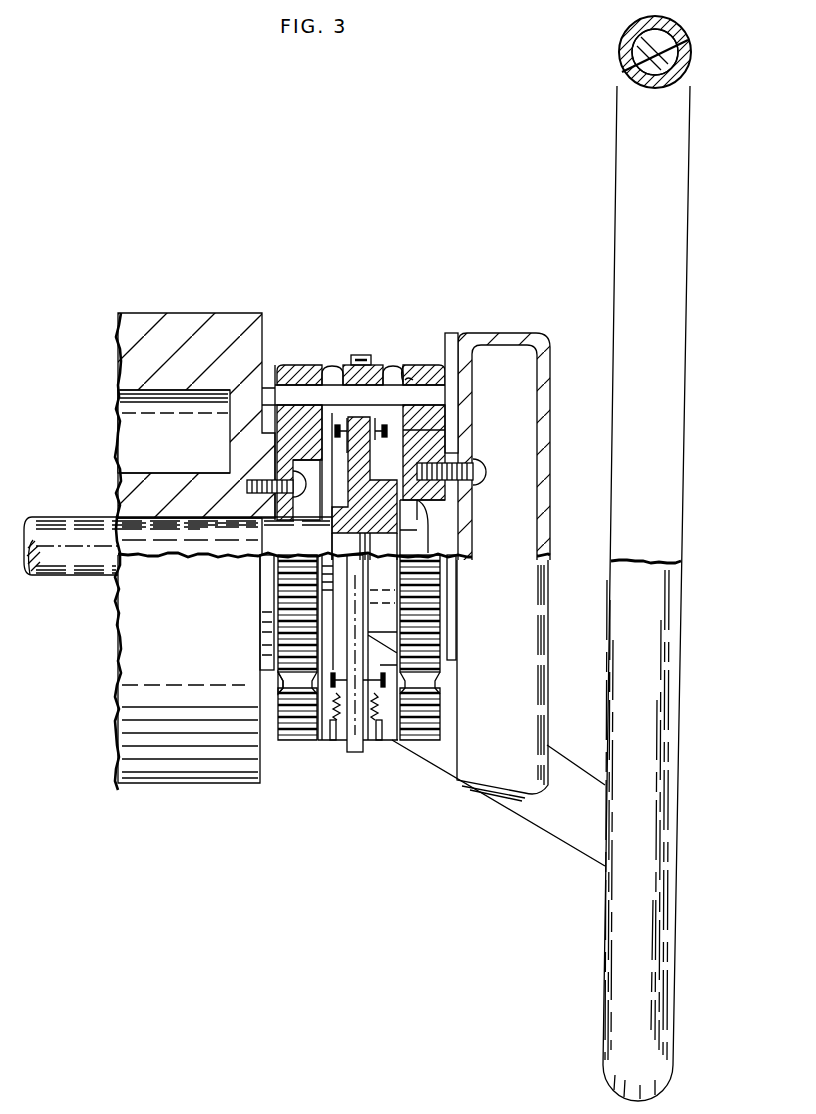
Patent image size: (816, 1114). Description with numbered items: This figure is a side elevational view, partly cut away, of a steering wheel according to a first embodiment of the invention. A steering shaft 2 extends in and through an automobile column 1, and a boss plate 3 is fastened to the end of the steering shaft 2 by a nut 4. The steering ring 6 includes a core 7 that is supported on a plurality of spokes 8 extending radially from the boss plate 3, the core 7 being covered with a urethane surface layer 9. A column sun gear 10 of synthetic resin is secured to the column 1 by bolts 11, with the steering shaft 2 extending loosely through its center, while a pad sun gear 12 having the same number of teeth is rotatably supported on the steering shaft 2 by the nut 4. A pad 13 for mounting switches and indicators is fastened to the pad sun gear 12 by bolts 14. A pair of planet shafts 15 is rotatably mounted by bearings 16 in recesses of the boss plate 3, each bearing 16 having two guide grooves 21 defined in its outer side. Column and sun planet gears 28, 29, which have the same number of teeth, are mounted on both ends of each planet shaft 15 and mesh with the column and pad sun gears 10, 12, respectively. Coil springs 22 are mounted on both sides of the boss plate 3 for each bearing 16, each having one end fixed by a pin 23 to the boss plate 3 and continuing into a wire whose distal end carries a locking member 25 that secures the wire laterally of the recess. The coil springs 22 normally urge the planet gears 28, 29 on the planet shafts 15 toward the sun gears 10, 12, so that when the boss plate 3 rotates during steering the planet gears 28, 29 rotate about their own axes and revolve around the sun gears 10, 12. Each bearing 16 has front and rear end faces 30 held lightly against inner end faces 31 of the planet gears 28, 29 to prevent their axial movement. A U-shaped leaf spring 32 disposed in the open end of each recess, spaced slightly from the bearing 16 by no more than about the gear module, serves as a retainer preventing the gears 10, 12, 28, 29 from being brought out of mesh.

The column 1 is at (205, 315).
The steering shaft 2 is at (62, 517).
The boss plate 3 is at (355, 752).
The nut 4 is at (446, 553).
The steering ring 6 is at (683, 549).
The core 7 is at (684, 62).
The spokes 8 is at (561, 838).
The urethane surface layer 9 is at (623, 56).
The column sun gear 10 is at (275, 588).
The bolts 11 is at (248, 487).
The pad sun gear 12 is at (455, 615).
The pad 13 is at (546, 642).
The bolts 14 is at (478, 478).
The planet shafts 15 is at (445, 408).
The bearings 16 is at (340, 362).
The guide grooves 21 is at (338, 742).
The coil springs 22 is at (334, 722).
The pin 23 is at (347, 669).
The locking member 25 is at (366, 440).
The column planet gear 28 is at (283, 365).
The sun planet gear 29 is at (426, 365).
The end faces 30 is at (408, 373).
The inner end faces 31 is at (330, 375).
The leaf spring 32 is at (360, 354).